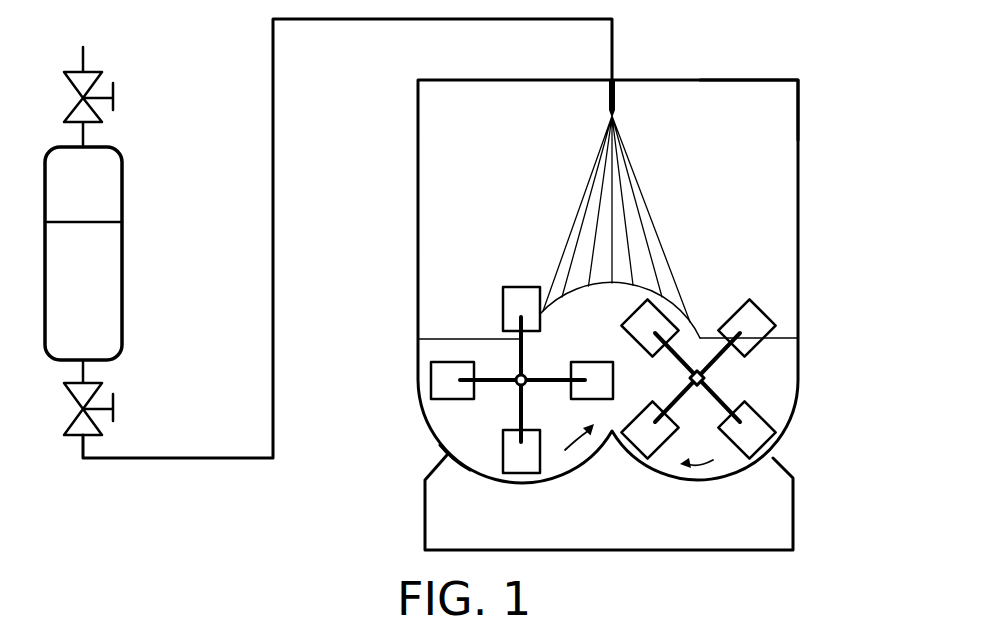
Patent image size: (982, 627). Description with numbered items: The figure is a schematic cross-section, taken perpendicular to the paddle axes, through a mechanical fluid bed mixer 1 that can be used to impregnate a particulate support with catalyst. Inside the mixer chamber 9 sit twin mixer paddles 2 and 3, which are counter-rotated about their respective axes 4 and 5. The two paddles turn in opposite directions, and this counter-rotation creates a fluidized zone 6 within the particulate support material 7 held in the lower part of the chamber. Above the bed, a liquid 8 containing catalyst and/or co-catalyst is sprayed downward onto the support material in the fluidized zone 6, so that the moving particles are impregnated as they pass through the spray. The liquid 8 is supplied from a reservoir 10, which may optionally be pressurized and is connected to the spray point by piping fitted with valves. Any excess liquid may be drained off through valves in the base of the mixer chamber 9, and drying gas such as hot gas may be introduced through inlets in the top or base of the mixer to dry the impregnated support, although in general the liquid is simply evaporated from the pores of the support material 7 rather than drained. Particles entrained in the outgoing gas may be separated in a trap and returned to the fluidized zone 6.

The mechanical fluid bed mixer 1 is at (418, 160).
The mixer paddle 2 is at (503, 292).
The mixer paddle 3 is at (763, 322).
The axis 4 is at (703, 377).
The axis 5 is at (517, 383).
The fluidized zone 6 is at (640, 284).
The particulate support material 7 is at (455, 445).
The liquid 8 is at (650, 200).
The mixer chamber 9 is at (770, 123).
The reservoir 10 is at (124, 258).